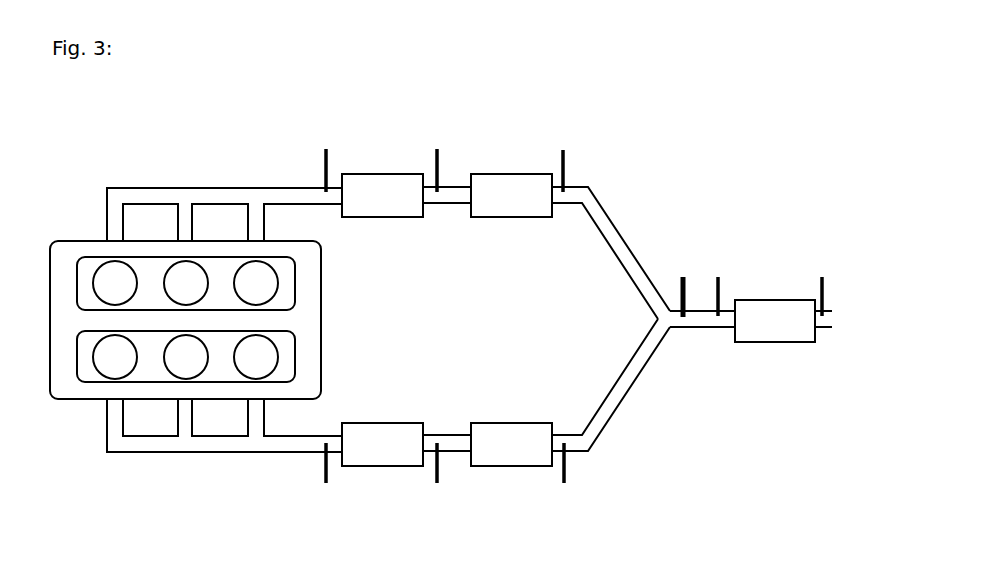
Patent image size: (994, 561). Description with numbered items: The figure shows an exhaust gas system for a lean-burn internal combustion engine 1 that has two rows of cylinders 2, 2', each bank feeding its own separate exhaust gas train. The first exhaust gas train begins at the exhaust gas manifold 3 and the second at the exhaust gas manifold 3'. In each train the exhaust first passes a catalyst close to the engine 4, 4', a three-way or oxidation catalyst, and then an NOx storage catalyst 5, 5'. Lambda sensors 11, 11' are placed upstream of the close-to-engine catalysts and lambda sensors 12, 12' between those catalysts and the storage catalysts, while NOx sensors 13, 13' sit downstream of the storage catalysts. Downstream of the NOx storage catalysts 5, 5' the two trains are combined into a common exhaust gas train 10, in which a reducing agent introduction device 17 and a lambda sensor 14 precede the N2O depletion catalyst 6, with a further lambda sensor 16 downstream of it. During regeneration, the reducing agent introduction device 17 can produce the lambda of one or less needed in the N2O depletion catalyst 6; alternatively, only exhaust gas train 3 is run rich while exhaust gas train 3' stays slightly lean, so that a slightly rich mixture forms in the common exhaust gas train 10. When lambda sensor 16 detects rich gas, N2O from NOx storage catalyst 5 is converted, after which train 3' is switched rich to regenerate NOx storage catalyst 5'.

The internal combustion engine 1 is at (307, 326).
The row of cylinders 2 is at (226, 282).
The row of cylinders 2' is at (229, 356).
The exhaust gas manifold 3 is at (224, 195).
The exhaust gas manifold 3' is at (224, 448).
The catalyst close to the engine 4 is at (382, 195).
The catalyst close to the engine 4' is at (382, 444).
The NOx storage catalyst 5 is at (511, 195).
The NOx storage catalyst 5' is at (511, 444).
The N2O depletion catalyst 6 is at (781, 330).
The common exhaust gas train 10 is at (698, 317).
The lambda sensor 11 is at (352, 153).
The lambda sensor 11' is at (348, 484).
The lambda sensor 12 is at (464, 153).
The lambda sensor 12' is at (469, 484).
The NOx sensor 13 is at (601, 153).
The NOx sensor 13' is at (590, 484).
The lambda sensor 14 is at (722, 275).
The lambda sensor 16 is at (823, 275).
The reducing agent introduction device 17 is at (688, 275).